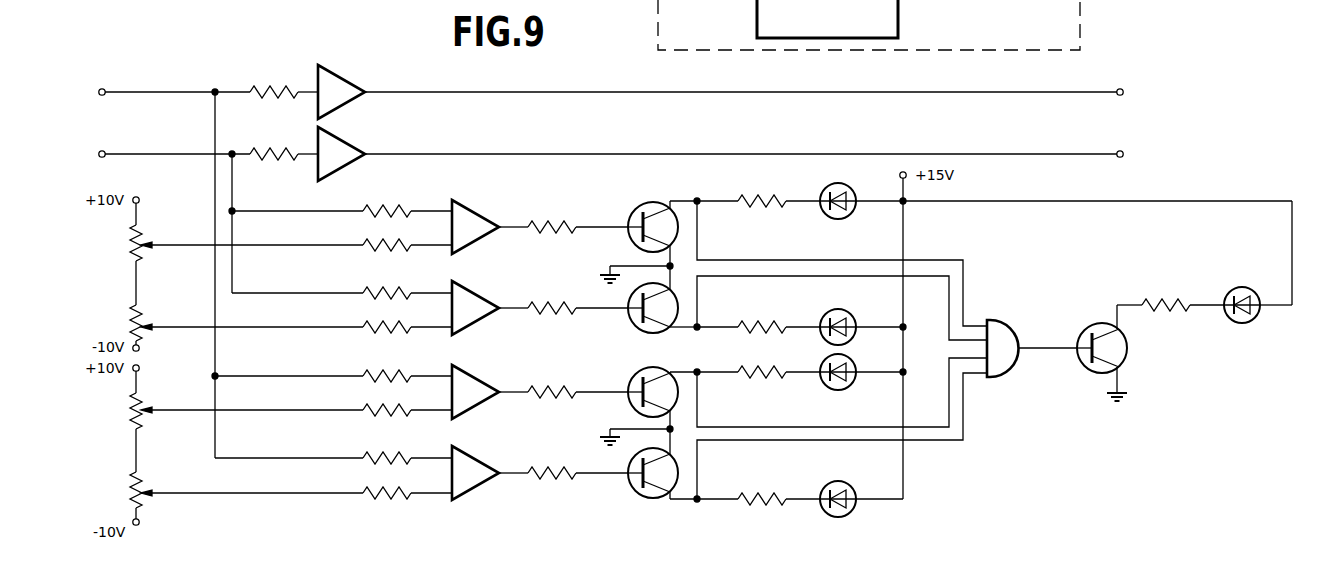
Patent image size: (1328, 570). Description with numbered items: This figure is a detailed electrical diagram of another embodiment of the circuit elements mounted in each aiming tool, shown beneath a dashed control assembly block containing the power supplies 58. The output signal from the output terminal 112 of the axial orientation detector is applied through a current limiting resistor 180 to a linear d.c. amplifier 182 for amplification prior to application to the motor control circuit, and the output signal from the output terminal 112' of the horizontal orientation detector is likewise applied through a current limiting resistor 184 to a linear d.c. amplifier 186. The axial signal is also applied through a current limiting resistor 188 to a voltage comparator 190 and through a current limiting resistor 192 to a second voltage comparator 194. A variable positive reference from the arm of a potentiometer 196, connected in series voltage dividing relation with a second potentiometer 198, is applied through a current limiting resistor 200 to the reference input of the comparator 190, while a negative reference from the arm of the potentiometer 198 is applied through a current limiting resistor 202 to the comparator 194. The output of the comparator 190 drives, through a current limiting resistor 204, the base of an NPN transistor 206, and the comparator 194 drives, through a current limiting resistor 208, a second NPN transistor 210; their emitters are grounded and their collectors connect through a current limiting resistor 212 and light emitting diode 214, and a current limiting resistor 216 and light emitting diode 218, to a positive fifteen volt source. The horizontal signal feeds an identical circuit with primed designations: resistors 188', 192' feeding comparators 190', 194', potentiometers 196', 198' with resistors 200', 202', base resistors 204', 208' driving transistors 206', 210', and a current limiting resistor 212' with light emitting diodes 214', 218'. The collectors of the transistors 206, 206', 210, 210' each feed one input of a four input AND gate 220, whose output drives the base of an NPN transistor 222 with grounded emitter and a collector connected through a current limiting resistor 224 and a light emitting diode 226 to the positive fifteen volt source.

The control assembly power supplies 58 is at (908, 25).
The output terminal 112 is at (174, 80).
The output terminal 112' is at (174, 142).
The current limiting resistor 180 is at (267, 84).
The linear d.c. amplifier 182 is at (350, 82).
The current limiting resistor 184 is at (267, 146).
The linear d.c. amplifier 186 is at (350, 144).
The current limiting resistor 188 is at (333, 366).
The current limiting resistor 188' is at (342, 199).
The voltage comparator 190 is at (490, 385).
The voltage comparator 190' is at (490, 219).
The current limiting resistor 192 is at (333, 447).
The current limiting resistor 192' is at (342, 281).
The voltage comparator 194 is at (490, 466).
The voltage comparator 194' is at (490, 303).
The potentiometer 196 is at (230, 432).
The potentiometer 196' is at (227, 265).
The potentiometer 198 is at (228, 495).
The potentiometer 198' is at (228, 325).
The current limiting resistor 200 is at (391, 417).
The current limiting resistor 200' is at (387, 236).
The current limiting resistor 202 is at (392, 501).
The current limiting resistor 202' is at (387, 332).
The current limiting resistor 204 is at (578, 374).
The current limiting resistor 204' is at (578, 215).
The NPN transistor 206 is at (639, 390).
The NPN transistor 206' is at (648, 221).
The current limiting resistor 208 is at (578, 456).
The current limiting resistor 208' is at (578, 296).
The NPN transistor 210 is at (636, 466).
The NPN transistor 210' is at (646, 301).
The current limiting resistor 212 is at (779, 349).
The current limiting resistor 212' is at (779, 216).
The light emitting diode 214 is at (839, 379).
The light emitting diode 214' is at (809, 239).
The current limiting resistor 216 is at (769, 492).
The light emitting diode 218 is at (839, 490).
The light emitting diode 218' is at (861, 323).
The AND gate 220 is at (1017, 334).
The NPN transistor 222 is at (1121, 361).
The current limiting resistor 224 is at (1179, 298).
The light emitting diode 226 is at (1230, 323).